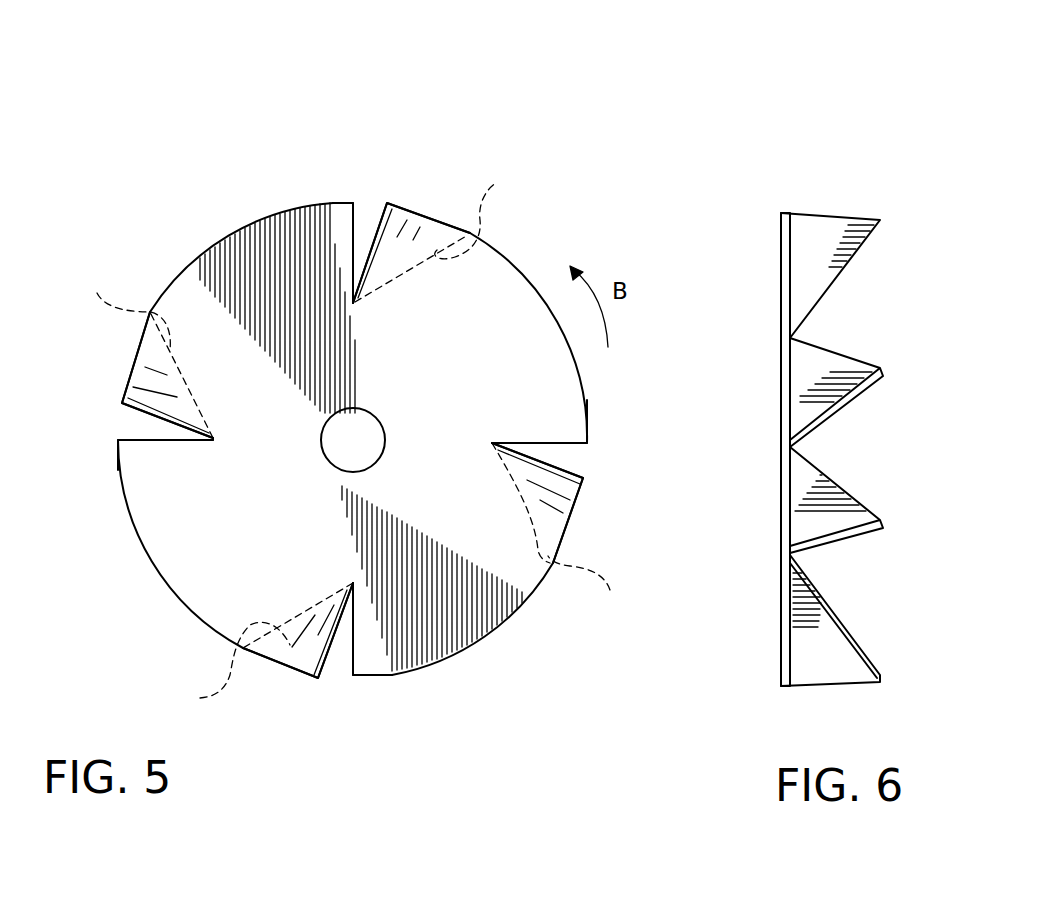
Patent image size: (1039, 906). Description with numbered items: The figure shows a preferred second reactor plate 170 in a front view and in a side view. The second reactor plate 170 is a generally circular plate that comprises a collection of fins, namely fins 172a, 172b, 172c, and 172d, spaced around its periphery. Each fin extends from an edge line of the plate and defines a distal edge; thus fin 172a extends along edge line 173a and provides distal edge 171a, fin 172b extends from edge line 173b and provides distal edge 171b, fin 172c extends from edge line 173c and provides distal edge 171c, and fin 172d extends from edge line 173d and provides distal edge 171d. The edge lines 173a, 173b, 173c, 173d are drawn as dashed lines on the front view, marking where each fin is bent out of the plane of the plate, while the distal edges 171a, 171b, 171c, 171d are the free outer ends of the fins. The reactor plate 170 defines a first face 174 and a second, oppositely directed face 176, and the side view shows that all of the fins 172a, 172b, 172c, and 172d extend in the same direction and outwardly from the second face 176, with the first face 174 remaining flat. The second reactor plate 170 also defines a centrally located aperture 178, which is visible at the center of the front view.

In FIG. 5, the second reactor plate 170 is at (197, 150).
In FIG. 6, the second reactor plate 170 is at (889, 178).
In FIG. 5, the distal edge 171a is at (368, 222).
In FIG. 5, the distal edge 171b is at (557, 463).
In FIG. 5, the distal edge 171c is at (330, 648).
In FIG. 5, the distal edge 171d is at (143, 416).
In FIG. 5, the fin 172a is at (396, 222).
In FIG. 6, the fin 172a is at (817, 252).
In FIG. 5, the fin 172b is at (547, 488).
In FIG. 6, the fin 172b is at (825, 525).
In FIG. 5, the fin 172c is at (308, 635).
In FIG. 6, the fin 172c is at (823, 653).
In FIG. 5, the fin 172d is at (145, 393).
In FIG. 6, the fin 172d is at (827, 385).
In FIG. 5, the edge line 173a is at (456, 236).
In FIG. 5, the edge line 173b is at (570, 529).
In FIG. 5, the edge line 173c is at (256, 648).
In FIG. 5, the edge line 173d is at (142, 350).
In FIG. 6, the first face 174 is at (780, 262).
In FIG. 5, the second face 176 is at (457, 372).
In FIG. 5, the aperture 178 is at (387, 456).